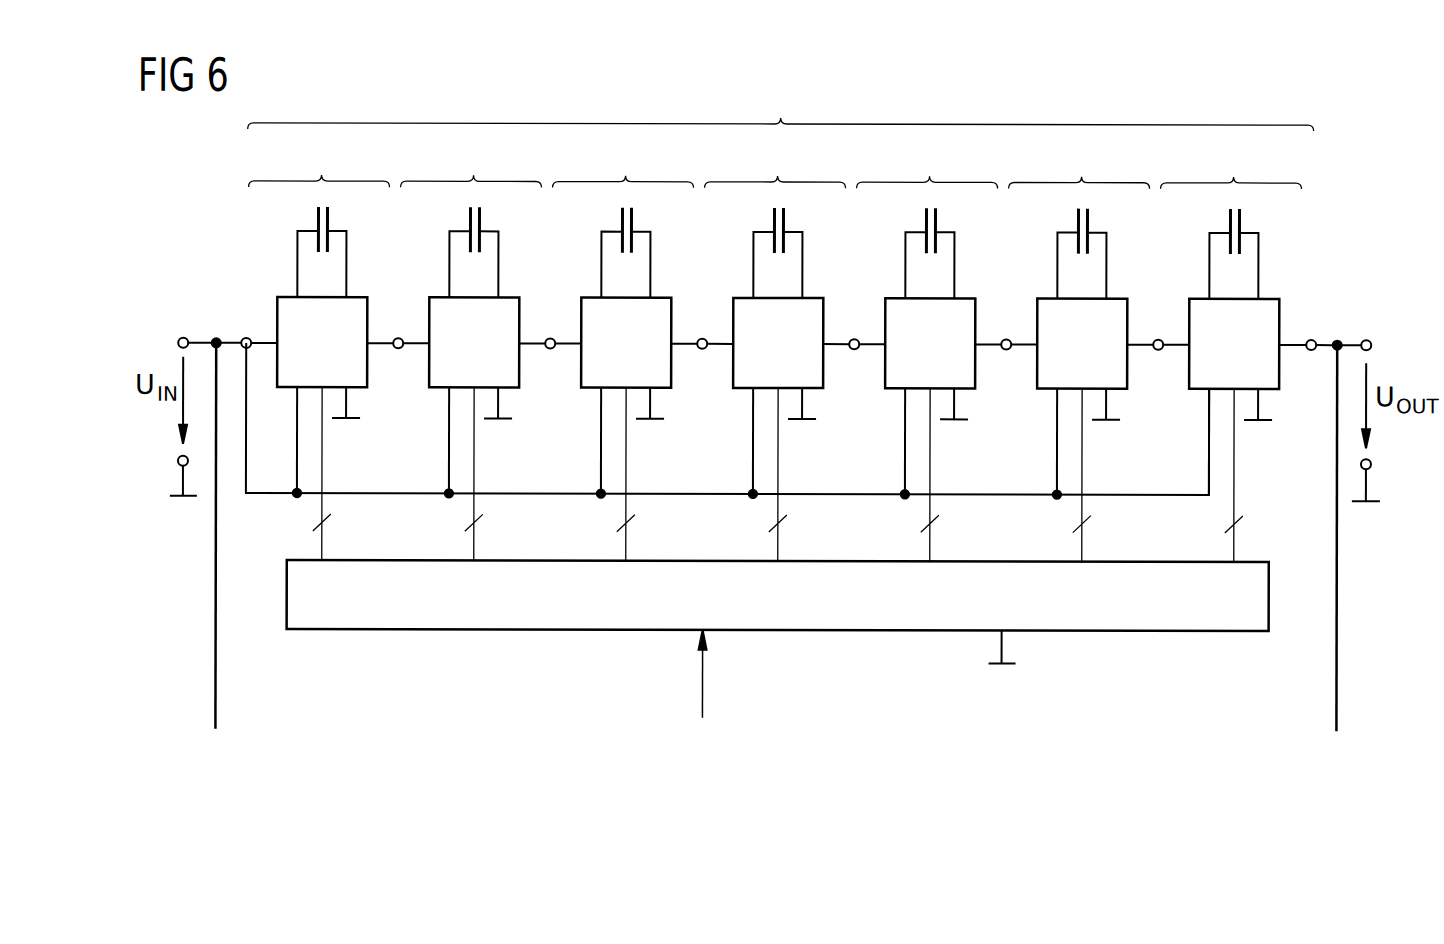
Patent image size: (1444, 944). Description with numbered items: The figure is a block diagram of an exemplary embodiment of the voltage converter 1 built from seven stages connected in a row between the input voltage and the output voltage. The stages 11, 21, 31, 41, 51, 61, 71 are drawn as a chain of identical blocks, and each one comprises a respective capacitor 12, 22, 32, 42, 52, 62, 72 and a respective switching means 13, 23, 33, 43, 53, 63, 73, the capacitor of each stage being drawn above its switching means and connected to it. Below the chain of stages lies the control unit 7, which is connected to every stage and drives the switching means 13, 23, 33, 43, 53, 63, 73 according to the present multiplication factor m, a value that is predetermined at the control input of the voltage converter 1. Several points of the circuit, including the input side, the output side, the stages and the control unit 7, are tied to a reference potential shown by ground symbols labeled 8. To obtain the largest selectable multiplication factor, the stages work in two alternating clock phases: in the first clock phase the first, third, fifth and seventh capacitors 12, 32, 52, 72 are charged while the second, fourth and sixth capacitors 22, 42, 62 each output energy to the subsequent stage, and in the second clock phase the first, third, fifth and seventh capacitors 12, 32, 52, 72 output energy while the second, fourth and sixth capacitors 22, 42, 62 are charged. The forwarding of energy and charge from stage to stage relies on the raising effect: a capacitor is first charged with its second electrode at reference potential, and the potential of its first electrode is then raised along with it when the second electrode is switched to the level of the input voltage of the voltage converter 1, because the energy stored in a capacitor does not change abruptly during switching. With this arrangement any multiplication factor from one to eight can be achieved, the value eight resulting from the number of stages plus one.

The voltage converter 1 is at (781, 107).
The control unit 7 is at (1270, 600).
The ground terminal 8 is at (176, 500).
The first stage 11 is at (321, 352).
The first capacitor 12 is at (330, 218).
The first switching means 13 is at (288, 292).
The second stage 21 is at (473, 352).
The second capacitor 22 is at (482, 218).
The second switching means 23 is at (440, 292).
The third stage 31 is at (625, 353).
The third capacitor 32 is at (634, 218).
The third switching means 33 is at (592, 292).
The fourth stage 41 is at (777, 353).
The fourth capacitor 42 is at (786, 218).
The fourth switching means 43 is at (744, 292).
The fifth stage 51 is at (929, 353).
The fifth capacitor 52 is at (938, 218).
The fifth switching means 53 is at (896, 292).
The sixth stage 61 is at (1081, 353).
The sixth capacitor 62 is at (1090, 218).
The sixth switching means 63 is at (1048, 292).
The seventh stage 71 is at (1233, 354).
The seventh capacitor 72 is at (1242, 218).
The seventh switching means 73 is at (1200, 292).